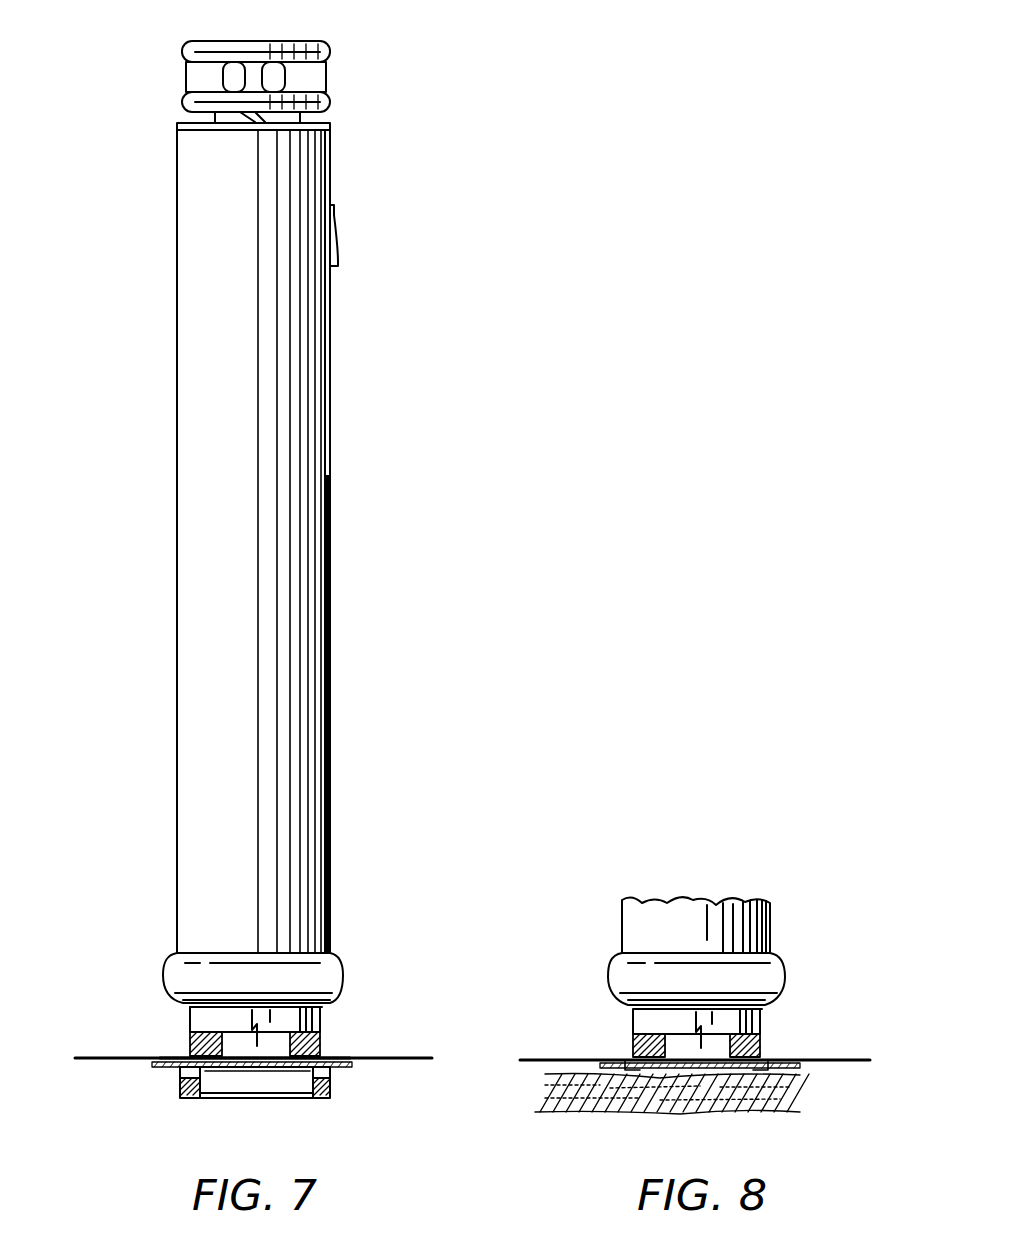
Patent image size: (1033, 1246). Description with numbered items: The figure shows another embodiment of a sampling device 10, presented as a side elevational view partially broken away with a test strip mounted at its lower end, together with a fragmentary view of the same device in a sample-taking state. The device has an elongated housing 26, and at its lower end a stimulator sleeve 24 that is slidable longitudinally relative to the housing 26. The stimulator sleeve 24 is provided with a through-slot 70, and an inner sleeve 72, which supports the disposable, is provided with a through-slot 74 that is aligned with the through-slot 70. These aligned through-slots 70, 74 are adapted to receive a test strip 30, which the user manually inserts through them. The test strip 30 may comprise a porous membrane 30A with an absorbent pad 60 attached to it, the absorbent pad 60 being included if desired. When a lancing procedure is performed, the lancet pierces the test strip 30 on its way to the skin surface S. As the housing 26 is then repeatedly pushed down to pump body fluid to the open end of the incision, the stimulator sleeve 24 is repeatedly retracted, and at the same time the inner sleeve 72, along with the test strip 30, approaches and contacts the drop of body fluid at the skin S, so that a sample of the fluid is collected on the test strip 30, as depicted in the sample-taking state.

In FIG. 7, the sampling device 10 is at (340, 342).
In FIG. 8, the sampling device 10 is at (782, 914).
In FIG. 7, the housing 26 is at (308, 602).
In FIG. 7, the stimulator sleeve 24 is at (188, 1038).
In FIG. 8, the stimulator sleeve 24 is at (635, 1035).
In FIG. 7, the inner sleeve 72 is at (313, 1035).
In FIG. 8, the inner sleeve 72 is at (762, 1023).
In FIG. 7, the test strip 30 is at (92, 1060).
In FIG. 8, the test strip 30 is at (851, 1057).
In FIG. 7, the porous membrane 30A is at (102, 1053).
In FIG. 7, the absorbent pad 60 is at (163, 1068).
In FIG. 7, the through-slot 70 is at (177, 1072).
In FIG. 8, the through-slot 70 is at (760, 1048).
In FIG. 7, the through-slot 74 is at (272, 1067).
In FIG. 8, the sealant S is at (560, 1075).